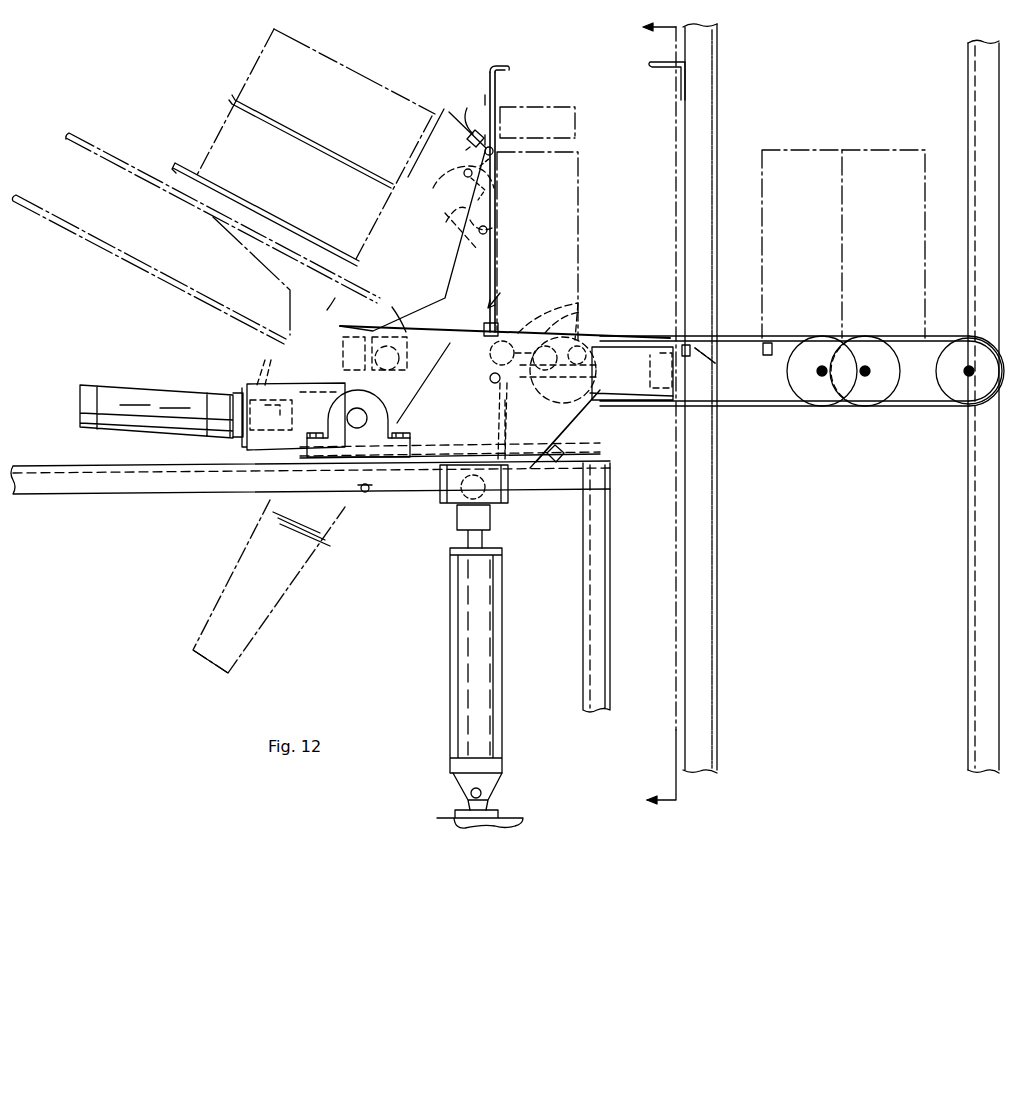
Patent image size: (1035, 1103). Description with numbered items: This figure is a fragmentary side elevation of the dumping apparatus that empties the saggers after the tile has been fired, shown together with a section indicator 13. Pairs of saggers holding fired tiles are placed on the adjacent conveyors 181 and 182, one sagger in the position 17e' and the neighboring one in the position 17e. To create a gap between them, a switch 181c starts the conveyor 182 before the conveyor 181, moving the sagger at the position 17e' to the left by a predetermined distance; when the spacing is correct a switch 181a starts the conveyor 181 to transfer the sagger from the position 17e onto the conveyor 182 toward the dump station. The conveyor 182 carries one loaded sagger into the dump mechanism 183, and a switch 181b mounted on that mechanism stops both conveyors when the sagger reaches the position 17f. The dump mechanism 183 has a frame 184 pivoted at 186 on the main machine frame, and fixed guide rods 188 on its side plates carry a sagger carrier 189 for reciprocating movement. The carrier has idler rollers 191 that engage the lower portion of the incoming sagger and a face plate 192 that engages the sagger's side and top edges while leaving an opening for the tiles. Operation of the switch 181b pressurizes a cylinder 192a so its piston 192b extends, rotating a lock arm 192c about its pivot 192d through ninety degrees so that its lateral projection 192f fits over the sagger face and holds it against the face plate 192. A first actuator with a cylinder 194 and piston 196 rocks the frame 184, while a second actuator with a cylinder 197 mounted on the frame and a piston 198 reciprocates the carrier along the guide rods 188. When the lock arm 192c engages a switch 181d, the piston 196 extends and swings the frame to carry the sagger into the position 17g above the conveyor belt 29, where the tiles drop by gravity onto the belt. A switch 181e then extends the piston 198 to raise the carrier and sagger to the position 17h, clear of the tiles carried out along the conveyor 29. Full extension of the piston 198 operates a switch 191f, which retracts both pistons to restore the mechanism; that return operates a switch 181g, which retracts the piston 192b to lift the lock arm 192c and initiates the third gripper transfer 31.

The section line 13- 13 is at (633, 416).
The sagger position 17h is at (340, 144).
The sagger position 17g is at (282, 180).
The sagger position 17f is at (537, 246).
The sagger position 17e' is at (802, 244).
The sagger position 17e is at (883, 244).
The conveyor belt 29 is at (110, 151).
The third gripper transfer 31 is at (578, 118).
The conveyor 181 is at (880, 408).
The switch 181a is at (700, 352).
The switch 181b is at (500, 322).
The switch 181c is at (770, 342).
The switch 181d is at (462, 118).
The switch 181e is at (366, 496).
The switch 181g is at (560, 458).
The conveyor 182 is at (747, 407).
The dump mechanism 183 is at (423, 473).
The frame 184 is at (485, 285).
The pivot 186 is at (362, 416).
The guide rod 188 is at (383, 383).
The sagger carrier 189 is at (500, 293).
The idler rollers 191 is at (583, 318).
The switch 191f is at (488, 416).
The face plate 192 is at (497, 222).
The cylinder 192a is at (446, 226).
The piston 192b is at (462, 180).
The lock arm 192c is at (497, 96).
The pivot 192d is at (495, 147).
The lateral projection 192f is at (505, 65).
The cylinder 194 is at (497, 646).
The piston 196 is at (486, 546).
The cylinder 197 is at (137, 385).
The piston 198 is at (266, 361).